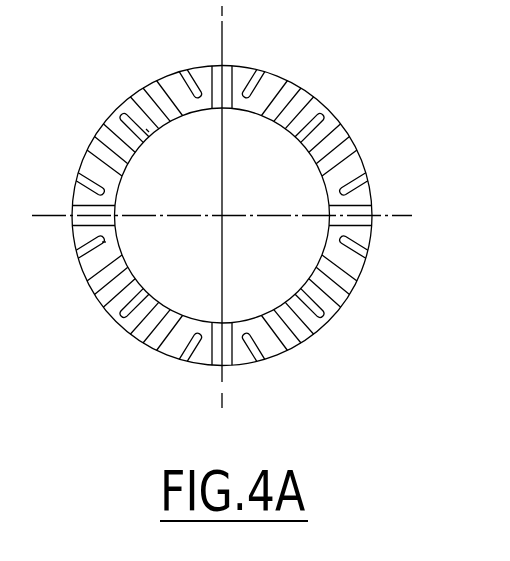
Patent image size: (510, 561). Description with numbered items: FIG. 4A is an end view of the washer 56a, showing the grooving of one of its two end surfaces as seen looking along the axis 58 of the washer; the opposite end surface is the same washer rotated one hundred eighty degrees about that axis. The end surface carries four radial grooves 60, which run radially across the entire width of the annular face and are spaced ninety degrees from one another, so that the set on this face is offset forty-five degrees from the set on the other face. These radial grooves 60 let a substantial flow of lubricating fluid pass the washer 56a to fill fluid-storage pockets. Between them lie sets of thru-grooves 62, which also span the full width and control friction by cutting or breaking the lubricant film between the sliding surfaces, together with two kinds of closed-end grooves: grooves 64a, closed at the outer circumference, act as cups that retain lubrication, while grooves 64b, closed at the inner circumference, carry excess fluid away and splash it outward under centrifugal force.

The washer 56a is at (141, 72).
The axis 58 is at (224, 39).
The radial grooves 60 is at (232, 72).
The thru-grooves 62 is at (140, 93).
The closed-end grooves 64a is at (149, 132).
The closed-end grooves 64b is at (106, 242).